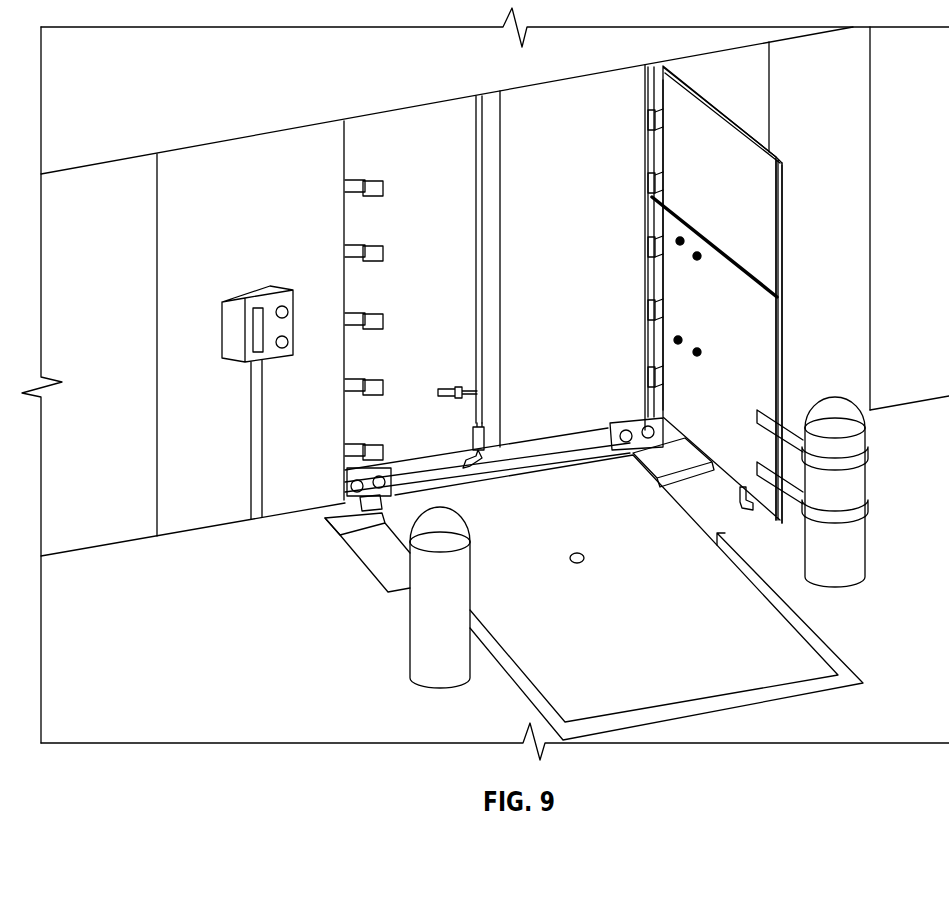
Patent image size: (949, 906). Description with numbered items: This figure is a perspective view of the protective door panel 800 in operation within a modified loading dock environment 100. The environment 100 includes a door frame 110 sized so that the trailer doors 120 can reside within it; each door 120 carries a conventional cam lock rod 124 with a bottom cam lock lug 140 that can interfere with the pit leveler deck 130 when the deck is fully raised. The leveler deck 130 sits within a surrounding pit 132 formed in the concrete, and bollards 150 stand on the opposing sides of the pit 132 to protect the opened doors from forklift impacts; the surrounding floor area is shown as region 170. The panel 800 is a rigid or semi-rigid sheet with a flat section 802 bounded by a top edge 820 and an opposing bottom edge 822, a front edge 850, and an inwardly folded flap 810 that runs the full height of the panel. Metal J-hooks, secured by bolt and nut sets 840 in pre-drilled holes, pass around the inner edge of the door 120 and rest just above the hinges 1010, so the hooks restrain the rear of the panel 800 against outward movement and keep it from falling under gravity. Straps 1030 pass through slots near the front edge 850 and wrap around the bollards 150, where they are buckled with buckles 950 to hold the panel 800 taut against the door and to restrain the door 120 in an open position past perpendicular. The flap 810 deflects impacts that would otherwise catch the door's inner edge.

The loading dock environment 100 is at (343, 547).
The door frame 110 is at (343, 421).
The door 120 is at (435, 345).
The cam lock rod 124 is at (483, 420).
The pit leveler deck 130 is at (627, 642).
The pit 132 is at (733, 712).
The bottom cam lock lug 140 is at (480, 460).
The bollard 150 is at (425, 610).
The ground surface 170 is at (405, 716).
The protective panel 800 is at (740, 230).
The flat section 802 is at (733, 411).
The folded flap 810 is at (647, 290).
The top edge 820 is at (748, 272).
The bottom edge 822 is at (717, 447).
The bolt and nut set 840 is at (697, 252).
The front edge 850 is at (786, 345).
The buckle 950 is at (780, 425).
The hinge 1010 is at (368, 198).
The strap 1030 is at (852, 456).